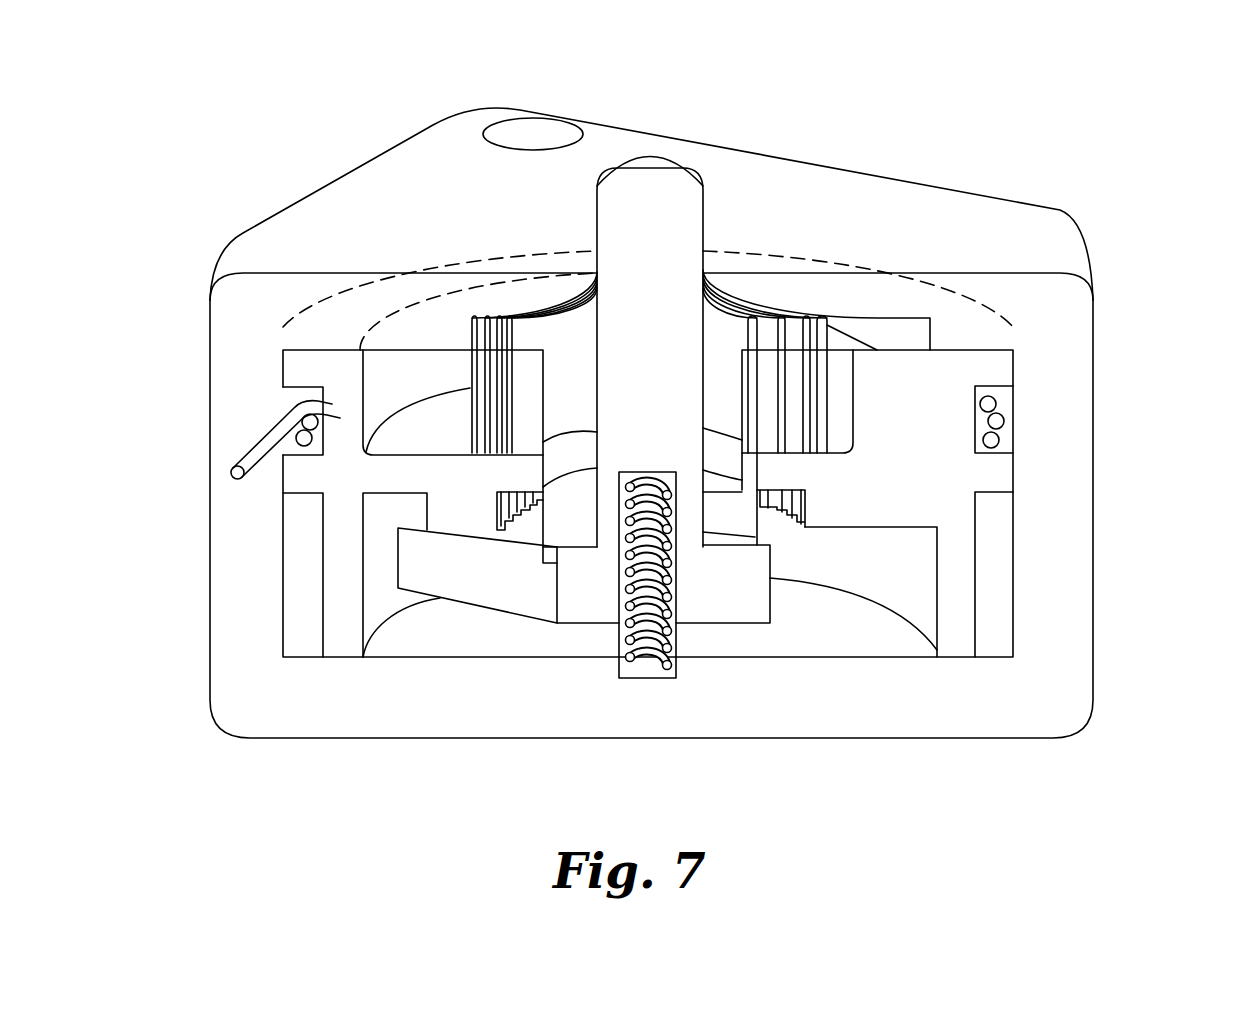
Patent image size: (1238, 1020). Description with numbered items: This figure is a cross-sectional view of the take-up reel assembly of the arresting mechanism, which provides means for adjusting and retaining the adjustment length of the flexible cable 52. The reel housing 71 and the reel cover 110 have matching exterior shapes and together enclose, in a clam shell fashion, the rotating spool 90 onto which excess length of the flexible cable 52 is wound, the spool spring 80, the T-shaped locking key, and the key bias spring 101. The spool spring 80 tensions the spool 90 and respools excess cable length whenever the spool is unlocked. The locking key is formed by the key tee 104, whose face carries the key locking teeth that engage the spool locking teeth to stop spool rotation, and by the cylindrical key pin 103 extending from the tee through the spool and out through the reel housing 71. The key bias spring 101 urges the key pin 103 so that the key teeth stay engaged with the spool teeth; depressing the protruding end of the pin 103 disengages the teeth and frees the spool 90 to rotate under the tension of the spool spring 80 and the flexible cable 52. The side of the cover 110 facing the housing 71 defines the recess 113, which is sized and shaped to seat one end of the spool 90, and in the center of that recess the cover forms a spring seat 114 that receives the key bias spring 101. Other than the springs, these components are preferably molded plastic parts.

The flexible cable 52 is at (262, 447).
The reel housing 71 is at (980, 226).
The spool spring 80 is at (757, 282).
The take-up spool 90 is at (1005, 363).
The key bias spring 101 is at (673, 632).
The key pin 103 is at (662, 172).
The key tee 104 is at (485, 607).
The reel cover 110 is at (1093, 673).
The recess 113 is at (997, 558).
The spring seat 114 is at (652, 678).